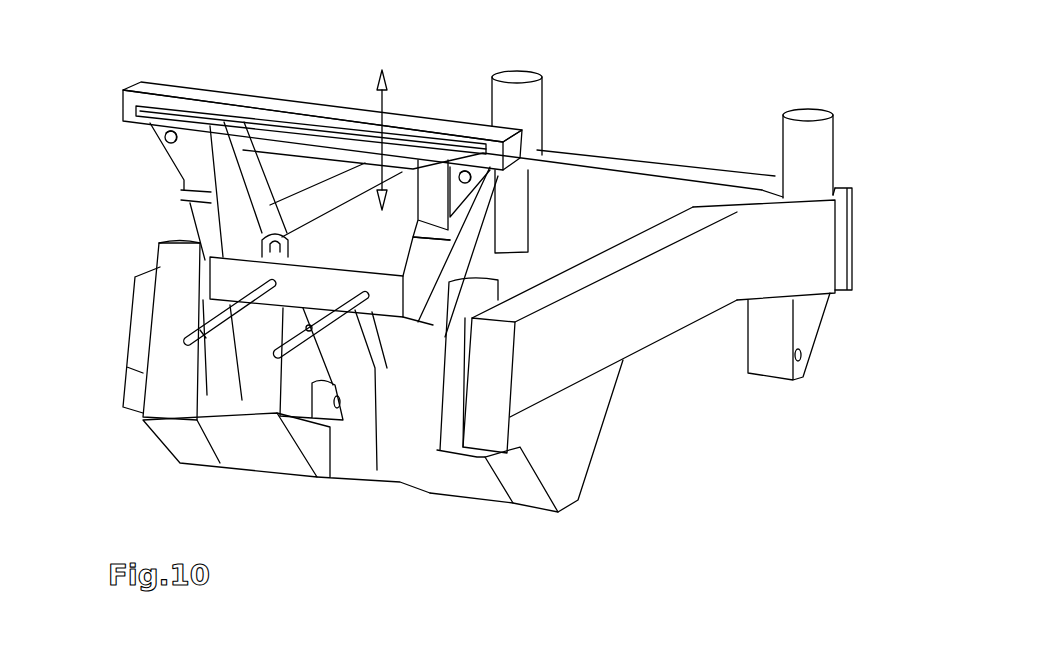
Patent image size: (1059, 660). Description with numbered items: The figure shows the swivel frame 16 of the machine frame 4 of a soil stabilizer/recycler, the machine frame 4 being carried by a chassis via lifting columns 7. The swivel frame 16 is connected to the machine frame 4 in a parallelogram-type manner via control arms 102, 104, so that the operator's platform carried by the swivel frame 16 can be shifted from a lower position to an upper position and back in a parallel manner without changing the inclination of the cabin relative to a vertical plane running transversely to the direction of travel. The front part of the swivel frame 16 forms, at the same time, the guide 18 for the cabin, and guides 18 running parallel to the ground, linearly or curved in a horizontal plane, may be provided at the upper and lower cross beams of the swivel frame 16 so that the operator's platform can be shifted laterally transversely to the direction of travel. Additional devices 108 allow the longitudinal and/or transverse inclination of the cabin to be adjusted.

The machine frame 4 is at (622, 163).
The lifting columns 7 is at (513, 98).
The swivel frame 16 is at (250, 100).
The guide 18 is at (163, 113).
The control arms 102 is at (238, 196).
The control arms 104 is at (312, 390).
The additional devices 108 is at (317, 307).